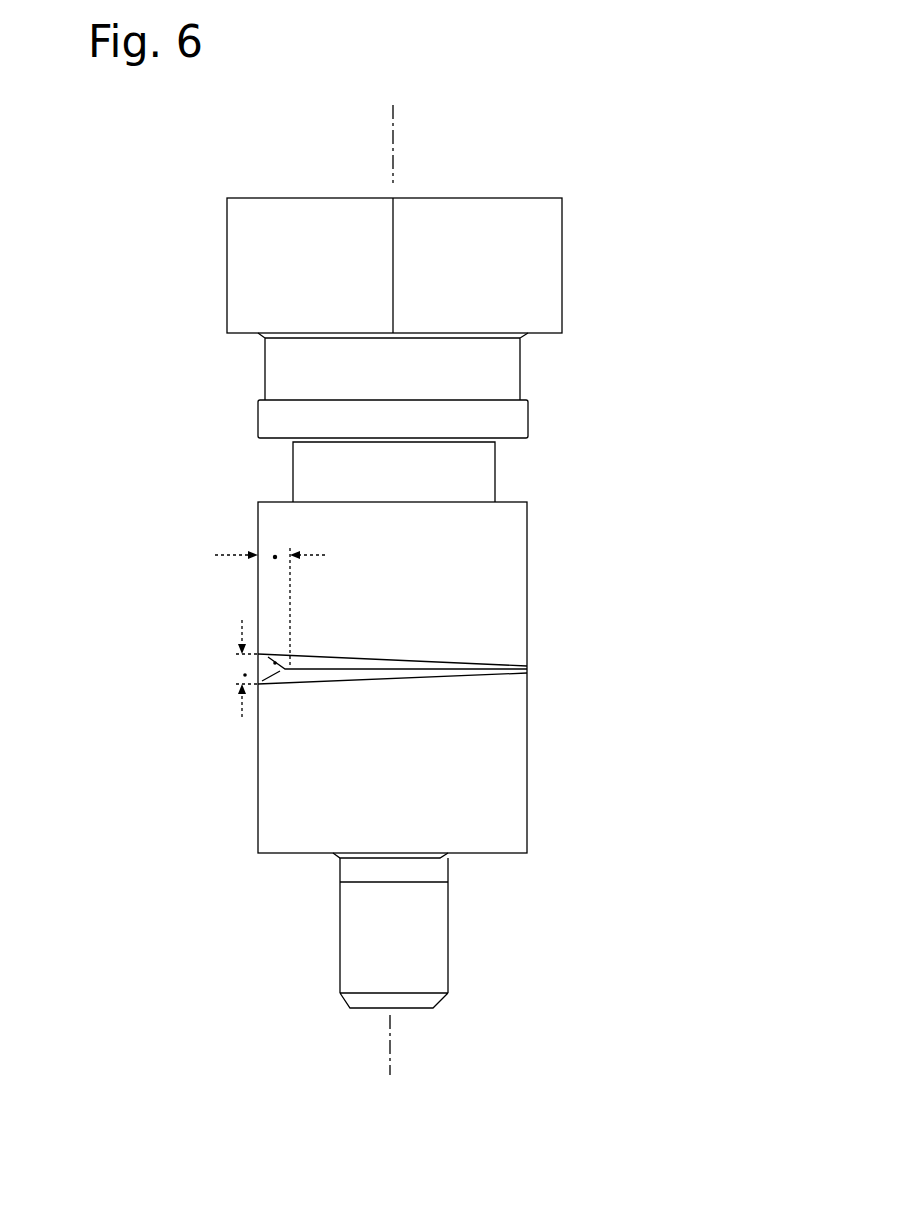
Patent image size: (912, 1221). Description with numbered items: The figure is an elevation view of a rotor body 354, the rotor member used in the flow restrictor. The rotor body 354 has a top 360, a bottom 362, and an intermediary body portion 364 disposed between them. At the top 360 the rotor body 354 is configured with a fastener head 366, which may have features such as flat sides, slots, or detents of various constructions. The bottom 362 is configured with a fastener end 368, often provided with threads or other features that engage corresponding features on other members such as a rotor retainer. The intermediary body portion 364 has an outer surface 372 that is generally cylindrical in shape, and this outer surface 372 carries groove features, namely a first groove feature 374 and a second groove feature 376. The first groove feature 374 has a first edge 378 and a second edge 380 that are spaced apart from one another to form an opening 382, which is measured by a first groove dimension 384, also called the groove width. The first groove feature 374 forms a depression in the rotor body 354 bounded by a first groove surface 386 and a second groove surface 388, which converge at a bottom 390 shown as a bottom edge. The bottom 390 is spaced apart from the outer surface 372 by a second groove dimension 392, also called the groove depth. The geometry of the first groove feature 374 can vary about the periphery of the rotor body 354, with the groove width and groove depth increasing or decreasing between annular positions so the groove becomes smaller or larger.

The rotor body 354 is at (664, 172).
The top 360 is at (200, 195).
The bottom 362 is at (305, 862).
The intermediary body portion 364 is at (94, 348).
The fastener head 366 is at (562, 263).
The fastener end 368 is at (448, 935).
The outer surface 372 is at (527, 543).
The first groove feature 374 is at (172, 641).
The second groove feature 376 is at (548, 437).
The first edge 378 is at (333, 657).
The second edge 380 is at (318, 683).
The opening 382 is at (226, 654).
The first groove dimension 384 is at (245, 675).
The first groove surface 386 is at (275, 663).
The second groove surface 388 is at (277, 680).
The bottom 390 is at (278, 677).
The second groove dimension 392 is at (275, 557).